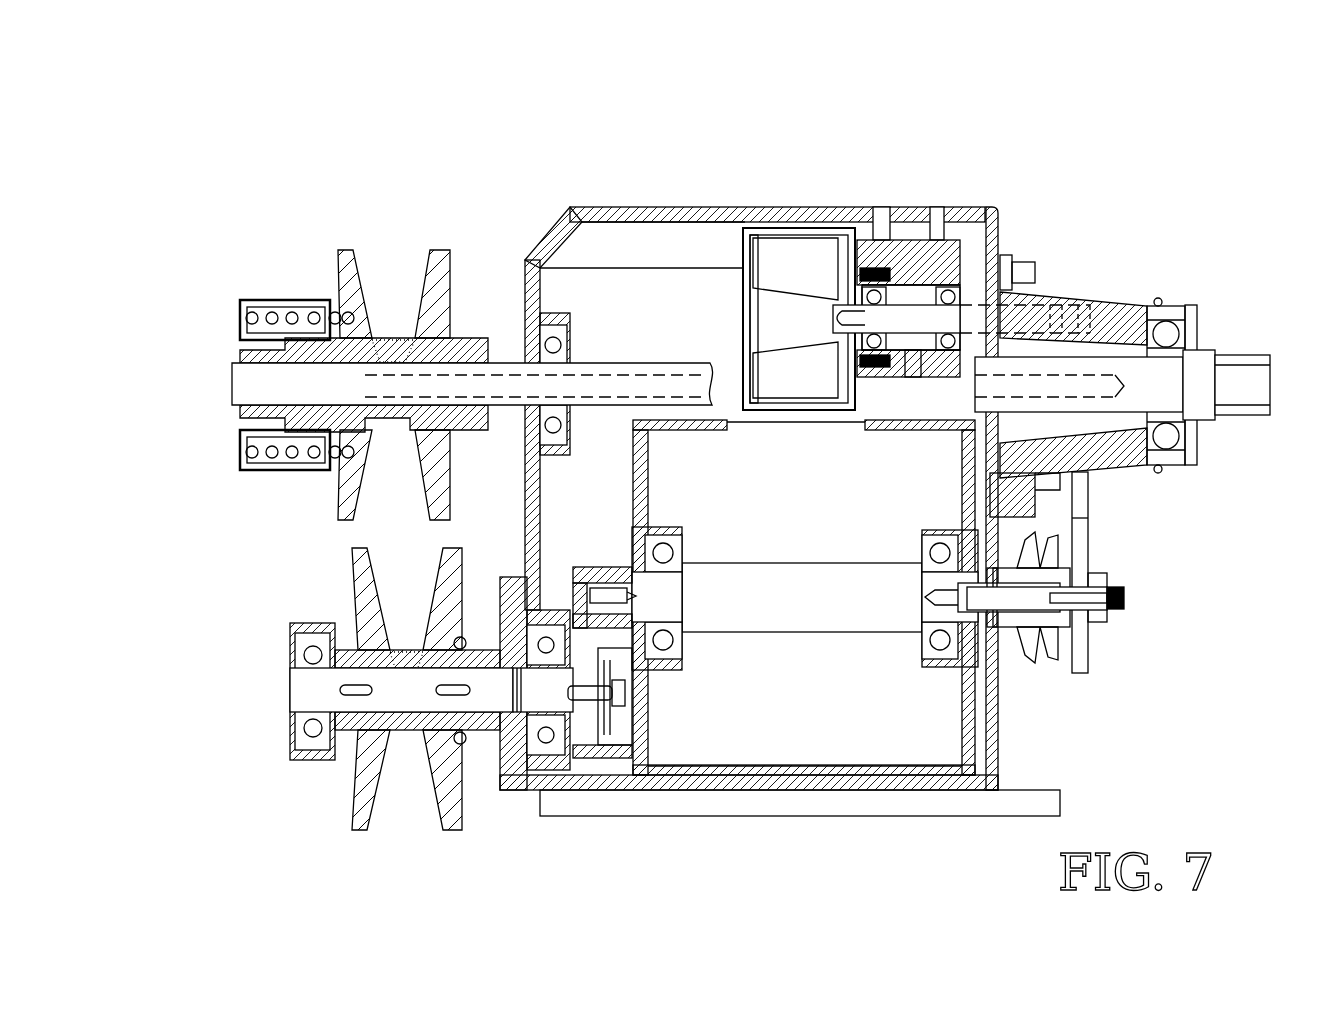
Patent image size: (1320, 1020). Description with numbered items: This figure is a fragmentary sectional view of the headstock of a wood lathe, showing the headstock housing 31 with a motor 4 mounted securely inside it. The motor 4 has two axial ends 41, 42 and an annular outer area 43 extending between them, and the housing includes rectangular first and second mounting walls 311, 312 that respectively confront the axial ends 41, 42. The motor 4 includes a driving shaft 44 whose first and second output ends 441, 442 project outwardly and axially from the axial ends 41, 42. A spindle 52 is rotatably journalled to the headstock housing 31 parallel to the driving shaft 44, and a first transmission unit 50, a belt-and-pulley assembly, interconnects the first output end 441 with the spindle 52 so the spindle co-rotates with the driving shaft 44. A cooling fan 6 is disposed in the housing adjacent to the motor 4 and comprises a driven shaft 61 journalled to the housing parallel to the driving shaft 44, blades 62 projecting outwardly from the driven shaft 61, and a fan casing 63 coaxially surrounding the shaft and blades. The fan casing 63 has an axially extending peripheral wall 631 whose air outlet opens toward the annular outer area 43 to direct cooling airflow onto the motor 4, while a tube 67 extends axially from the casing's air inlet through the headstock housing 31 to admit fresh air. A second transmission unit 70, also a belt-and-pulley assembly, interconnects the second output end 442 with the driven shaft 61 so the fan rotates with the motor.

The headstock housing 31 is at (630, 205).
The first mounting wall 311 is at (525, 268).
The second mounting wall 312 is at (992, 728).
The tube 67 is at (583, 278).
The spindle 52 is at (245, 387).
The cooling fan 6 is at (801, 412).
The peripheral wall 631 is at (765, 232).
The blades 62 is at (797, 232).
The fan casing 63 is at (843, 232).
The driven shaft 61 is at (915, 322).
The second transmission unit 70 is at (1094, 512).
The motor 4 is at (975, 740).
The axial end 42 is at (992, 772).
The annular outer area 43 is at (763, 737).
The driving shaft 44 is at (810, 628).
The first output end 441 is at (635, 608).
The second output end 442 is at (968, 618).
The axial end 41 is at (628, 750).
The first transmission unit 50 is at (346, 795).